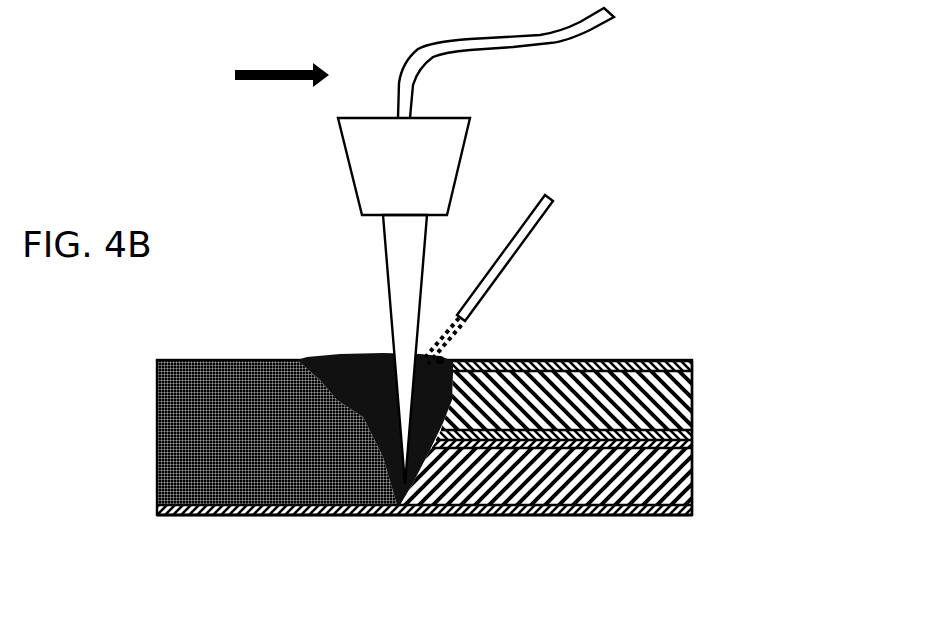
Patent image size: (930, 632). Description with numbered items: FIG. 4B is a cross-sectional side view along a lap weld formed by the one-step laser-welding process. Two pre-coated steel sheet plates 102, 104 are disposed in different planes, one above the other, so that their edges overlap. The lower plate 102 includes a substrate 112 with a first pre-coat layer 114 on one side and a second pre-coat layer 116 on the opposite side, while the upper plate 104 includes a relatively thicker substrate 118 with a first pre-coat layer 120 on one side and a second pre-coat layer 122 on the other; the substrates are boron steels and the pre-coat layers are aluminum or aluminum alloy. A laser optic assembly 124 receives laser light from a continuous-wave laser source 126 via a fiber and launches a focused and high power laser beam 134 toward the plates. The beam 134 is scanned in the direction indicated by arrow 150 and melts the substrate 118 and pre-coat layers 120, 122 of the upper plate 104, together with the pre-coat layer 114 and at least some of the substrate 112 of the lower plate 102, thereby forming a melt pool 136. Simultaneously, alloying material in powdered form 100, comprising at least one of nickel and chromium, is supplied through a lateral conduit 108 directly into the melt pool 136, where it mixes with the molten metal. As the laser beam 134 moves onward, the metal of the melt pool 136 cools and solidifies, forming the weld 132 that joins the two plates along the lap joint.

The alloying material in powdered form 100 is at (455, 337).
The pre-coated steel sheet plate 102 is at (600, 515).
The pre-coated steel sheet plate 104 is at (650, 361).
The lateral conduit 108 is at (510, 253).
The substrate 112 is at (693, 465).
The first pre-coat layer 114 is at (693, 443).
The second pre-coat layer 116 is at (693, 512).
The substrate 118 is at (693, 402).
The first pre-coat layer 120 is at (693, 364).
The second pre-coat layer 122 is at (693, 432).
The laser optic assembly 124 is at (430, 165).
The laser source 126 is at (592, 32).
The weld 132 is at (217, 367).
The focused and high power laser beam 134 is at (388, 272).
The melt pool 136 is at (360, 363).
The arrow 150 is at (255, 80).